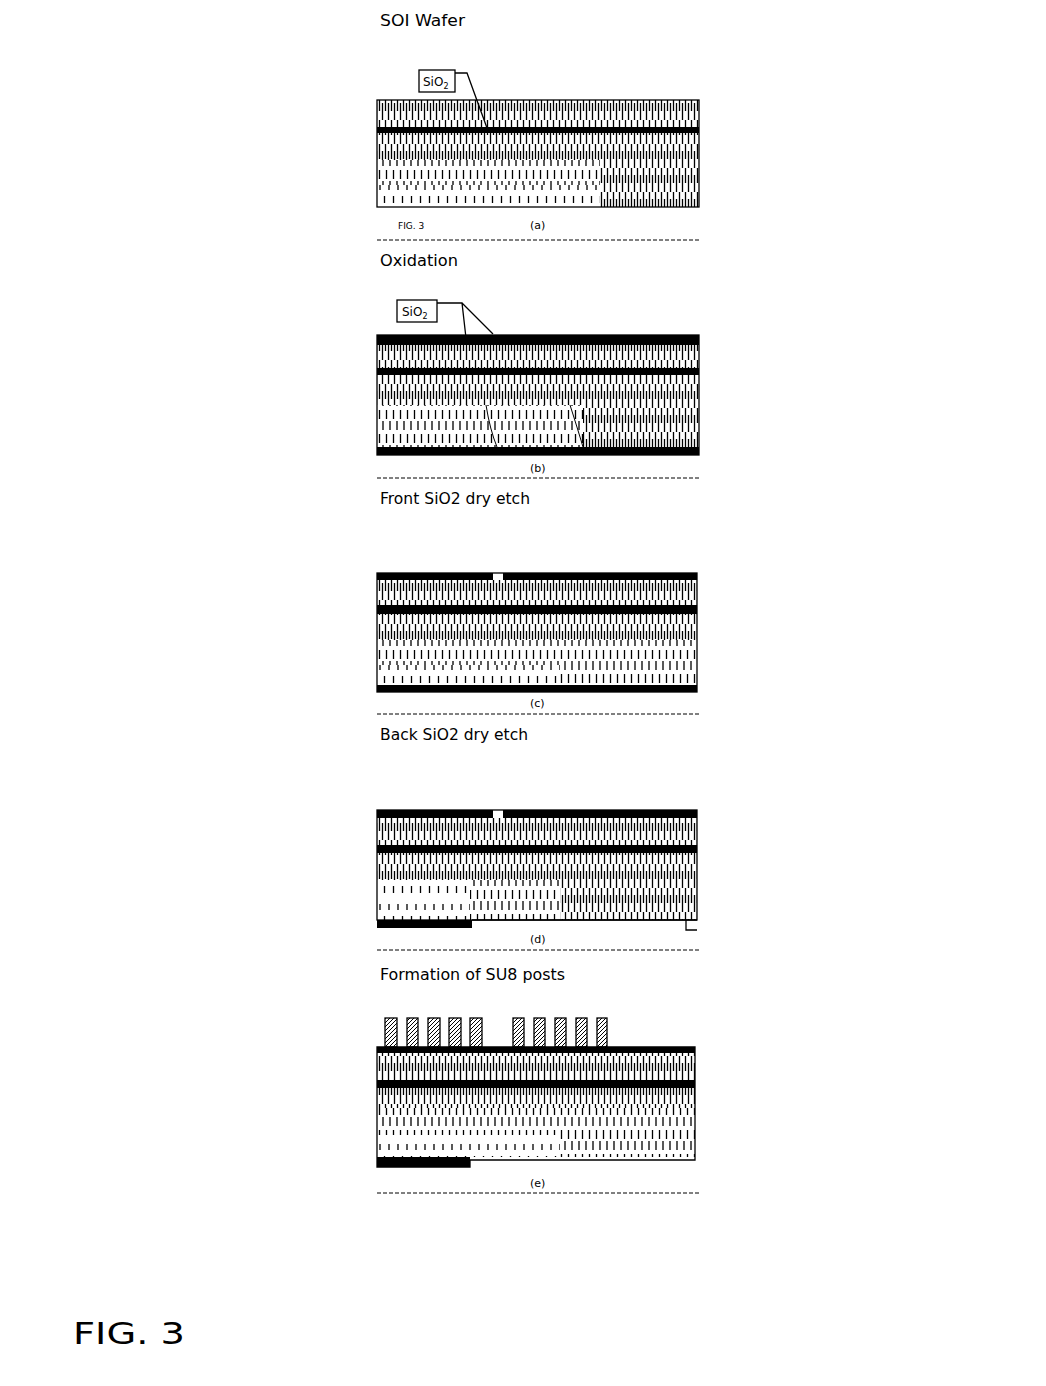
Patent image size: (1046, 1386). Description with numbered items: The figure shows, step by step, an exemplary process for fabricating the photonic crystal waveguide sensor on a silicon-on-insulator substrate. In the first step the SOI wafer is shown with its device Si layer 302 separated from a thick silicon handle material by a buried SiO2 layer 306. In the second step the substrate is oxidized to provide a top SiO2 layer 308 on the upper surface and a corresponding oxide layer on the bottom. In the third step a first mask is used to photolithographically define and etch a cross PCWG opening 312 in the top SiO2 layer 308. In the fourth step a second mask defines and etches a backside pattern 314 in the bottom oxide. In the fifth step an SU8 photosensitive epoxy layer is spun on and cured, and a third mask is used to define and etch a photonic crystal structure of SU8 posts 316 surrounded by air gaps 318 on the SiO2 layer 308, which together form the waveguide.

The device Si layer 302 is at (538, 145).
The buried SiO2 layer 306 is at (616, 105).
The top SiO2 layer 308 is at (597, 337).
The cross PCWG opening 312 is at (498, 573).
The backside pattern 314 is at (572, 926).
The SU8 posts 316 is at (603, 1017).
The air gaps 318 is at (550, 1020).